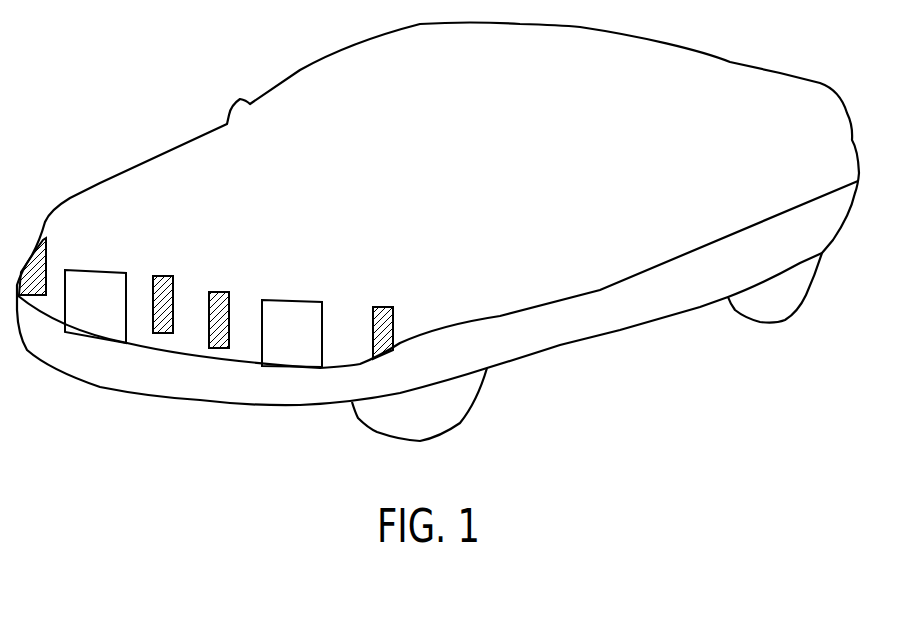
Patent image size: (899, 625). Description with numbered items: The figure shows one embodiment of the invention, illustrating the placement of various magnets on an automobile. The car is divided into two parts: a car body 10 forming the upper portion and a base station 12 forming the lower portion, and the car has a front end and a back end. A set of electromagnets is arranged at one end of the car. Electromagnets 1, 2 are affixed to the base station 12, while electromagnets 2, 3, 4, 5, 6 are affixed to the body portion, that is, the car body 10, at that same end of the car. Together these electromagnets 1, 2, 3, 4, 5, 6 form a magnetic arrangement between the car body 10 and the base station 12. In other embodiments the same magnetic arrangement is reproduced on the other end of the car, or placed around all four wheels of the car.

The car body 10 is at (222, 167).
The base station 12 is at (518, 338).
The electromagnet 1 is at (95, 306).
The electromagnet 2 is at (292, 333).
The electromagnet 3 is at (53, 255).
The electromagnet 4 is at (163, 284).
The electromagnet 5 is at (219, 298).
The electromagnet 6 is at (382, 313).